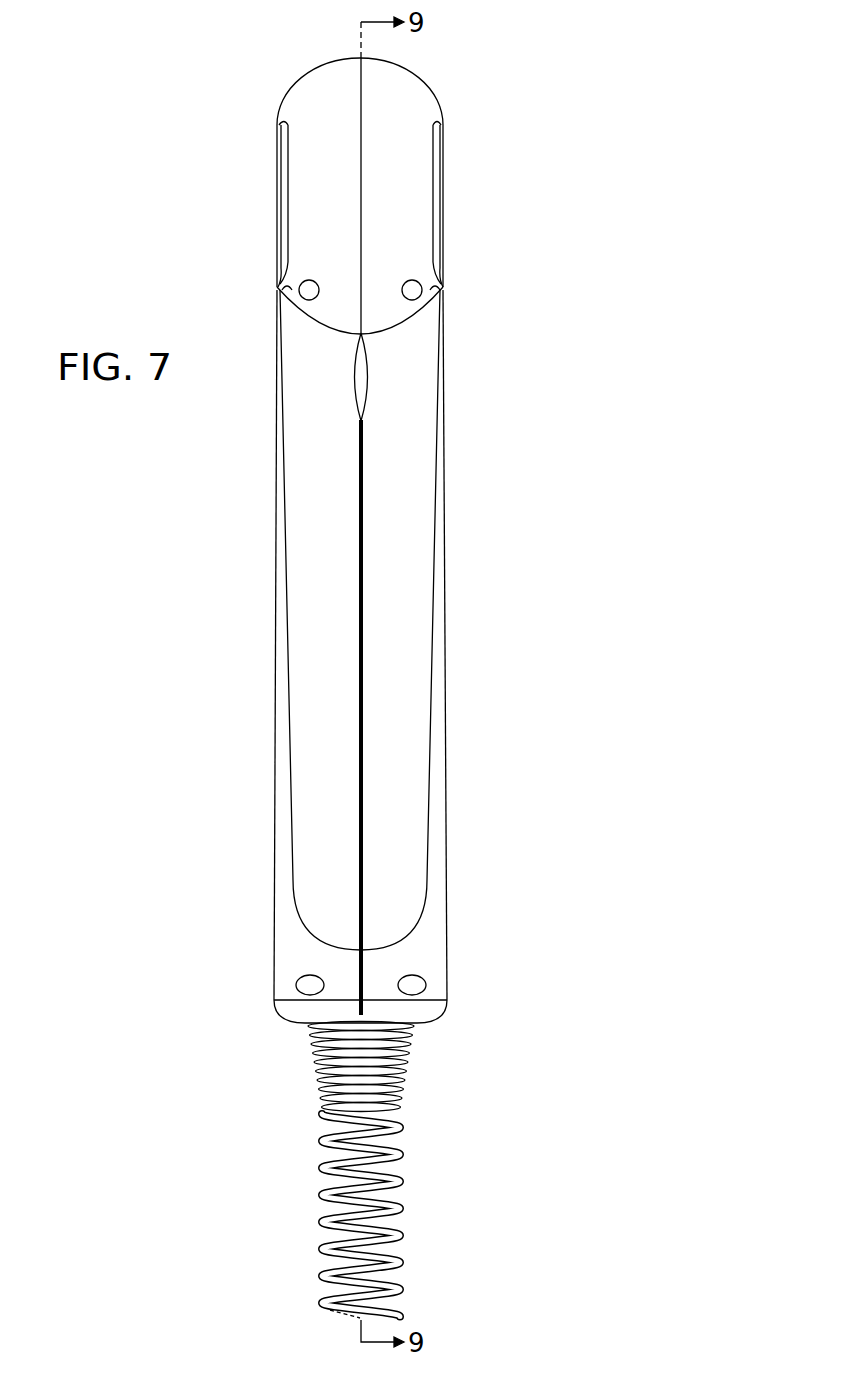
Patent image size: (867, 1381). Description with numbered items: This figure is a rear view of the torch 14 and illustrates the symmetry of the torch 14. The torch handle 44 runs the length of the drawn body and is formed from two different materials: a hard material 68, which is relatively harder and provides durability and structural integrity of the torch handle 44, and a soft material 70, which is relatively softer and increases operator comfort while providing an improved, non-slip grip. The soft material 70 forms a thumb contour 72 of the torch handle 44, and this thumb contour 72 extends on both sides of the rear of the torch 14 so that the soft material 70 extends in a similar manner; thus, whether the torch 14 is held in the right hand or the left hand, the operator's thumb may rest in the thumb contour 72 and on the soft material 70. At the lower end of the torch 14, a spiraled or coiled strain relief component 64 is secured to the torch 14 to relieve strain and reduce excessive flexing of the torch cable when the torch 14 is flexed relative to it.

The torch 14 is at (662, 205).
The torch handle 44 is at (445, 826).
The strain relief component 64 is at (400, 1170).
The hard material 68 is at (436, 180).
The soft material 70 is at (442, 513).
The thumb contour 72 is at (443, 358).